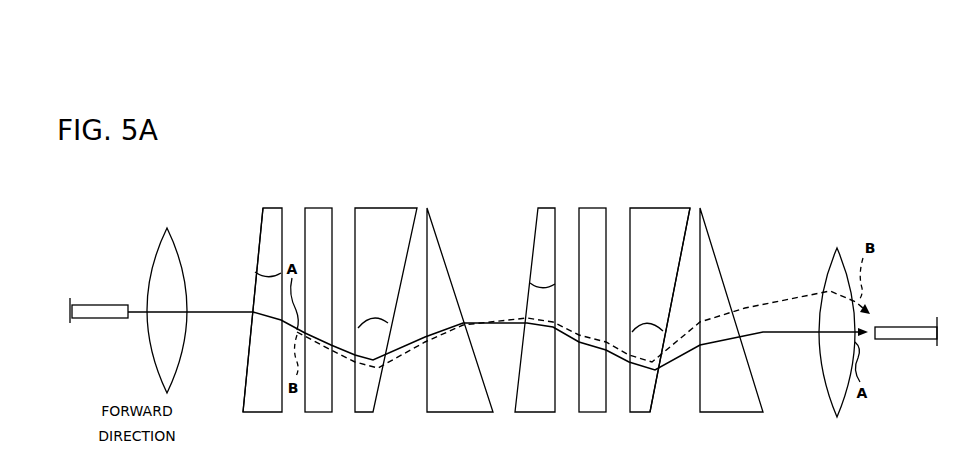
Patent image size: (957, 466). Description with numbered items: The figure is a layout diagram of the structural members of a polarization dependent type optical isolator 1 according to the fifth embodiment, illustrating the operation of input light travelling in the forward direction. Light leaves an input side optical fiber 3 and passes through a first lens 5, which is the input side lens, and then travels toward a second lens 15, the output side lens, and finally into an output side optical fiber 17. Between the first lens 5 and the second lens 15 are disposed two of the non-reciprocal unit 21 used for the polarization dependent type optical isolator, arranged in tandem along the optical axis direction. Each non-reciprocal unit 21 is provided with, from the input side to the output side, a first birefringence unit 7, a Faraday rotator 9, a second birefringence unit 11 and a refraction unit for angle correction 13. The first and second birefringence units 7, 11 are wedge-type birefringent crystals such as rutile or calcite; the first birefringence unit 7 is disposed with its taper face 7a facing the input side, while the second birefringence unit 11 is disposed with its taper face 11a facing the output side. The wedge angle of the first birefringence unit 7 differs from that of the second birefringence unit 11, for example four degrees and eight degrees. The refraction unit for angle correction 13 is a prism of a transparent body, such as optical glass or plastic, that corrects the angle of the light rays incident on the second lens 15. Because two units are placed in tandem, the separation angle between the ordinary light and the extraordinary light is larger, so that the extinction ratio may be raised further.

The polarization dependent type optical isolator 1 is at (782, 189).
The input side optical fiber 3 is at (95, 304).
The first lens 5 is at (168, 228).
The first birefringence unit 7 is at (279, 208).
The taper face 7a is at (246, 382).
The Faraday rotator 9 is at (332, 208).
The second birefringence unit 11 is at (400, 208).
The taper face 11a is at (654, 392).
The refraction unit for angle correction 13 is at (437, 236).
The second lens 15 is at (838, 248).
The output side optical fiber 17 is at (918, 327).
The non-reciprocal unit 21 is at (283, 150).